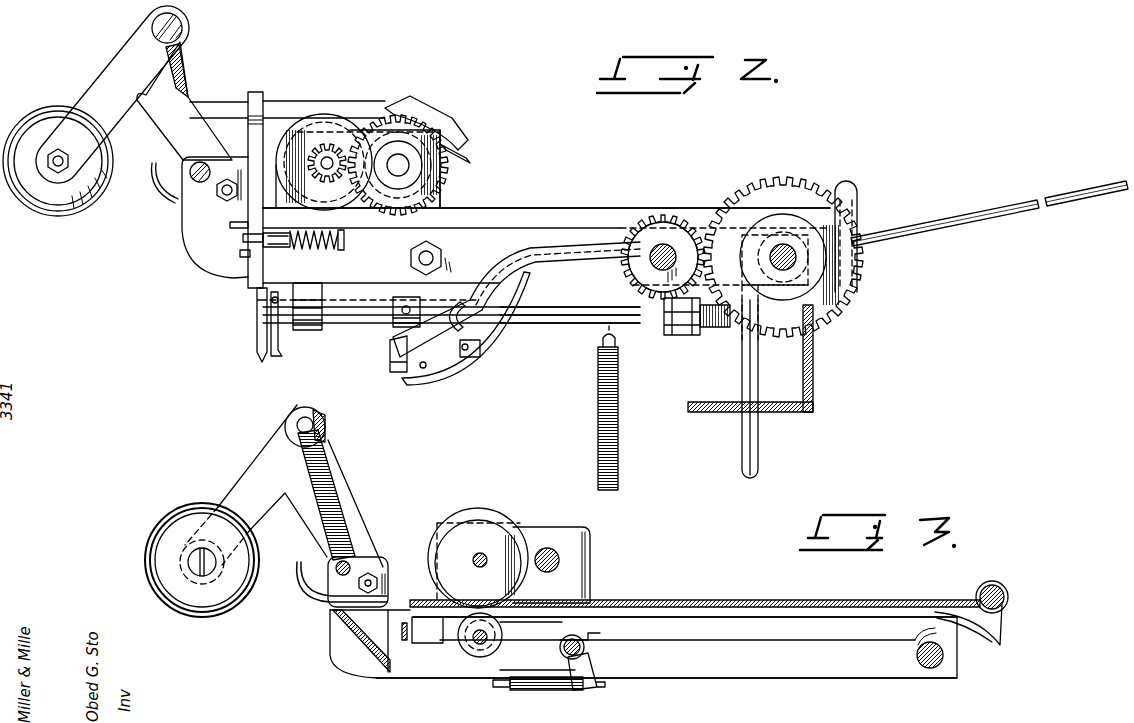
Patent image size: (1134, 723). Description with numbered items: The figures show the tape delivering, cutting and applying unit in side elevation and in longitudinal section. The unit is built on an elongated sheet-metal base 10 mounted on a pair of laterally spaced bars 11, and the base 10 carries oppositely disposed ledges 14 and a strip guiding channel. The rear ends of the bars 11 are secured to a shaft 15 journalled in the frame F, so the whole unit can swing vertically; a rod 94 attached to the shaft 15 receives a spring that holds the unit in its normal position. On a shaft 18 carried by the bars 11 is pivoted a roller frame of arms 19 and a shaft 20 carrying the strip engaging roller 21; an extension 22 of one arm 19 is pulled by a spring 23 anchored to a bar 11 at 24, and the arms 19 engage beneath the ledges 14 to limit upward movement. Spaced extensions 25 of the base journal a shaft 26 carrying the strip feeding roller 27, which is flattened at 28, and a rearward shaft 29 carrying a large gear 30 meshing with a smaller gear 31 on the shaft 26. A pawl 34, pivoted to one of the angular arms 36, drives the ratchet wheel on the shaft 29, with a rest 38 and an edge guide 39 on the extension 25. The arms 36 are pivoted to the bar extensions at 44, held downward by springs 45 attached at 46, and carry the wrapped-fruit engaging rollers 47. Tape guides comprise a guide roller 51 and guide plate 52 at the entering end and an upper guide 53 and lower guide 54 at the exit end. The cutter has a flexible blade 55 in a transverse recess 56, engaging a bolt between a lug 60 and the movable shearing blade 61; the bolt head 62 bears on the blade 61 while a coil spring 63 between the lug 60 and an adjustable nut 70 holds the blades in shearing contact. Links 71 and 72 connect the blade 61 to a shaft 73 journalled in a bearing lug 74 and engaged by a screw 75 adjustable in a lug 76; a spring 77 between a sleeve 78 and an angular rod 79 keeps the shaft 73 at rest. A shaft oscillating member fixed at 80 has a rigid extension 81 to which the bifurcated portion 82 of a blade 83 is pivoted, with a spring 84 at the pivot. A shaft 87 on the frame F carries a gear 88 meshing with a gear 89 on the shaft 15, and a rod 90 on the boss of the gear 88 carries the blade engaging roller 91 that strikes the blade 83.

In FIG. 2, the base 10 is at (535, 208).
In FIG. 3, the base 10 is at (675, 602).
In FIG. 2, the bars 11 is at (570, 226).
In FIG. 3, the bars 11 is at (820, 665).
In FIG. 3, the ledges 14 is at (770, 617).
In FIG. 2, the shaft 15 is at (784, 246).
In FIG. 3, the shaft 15 is at (944, 658).
In FIG. 2, the shaft 18 is at (443, 254).
In FIG. 3, the shaft 18 is at (592, 640).
In FIG. 3, the arms 19 is at (568, 642).
In FIG. 3, the shaft 20 is at (478, 645).
In FIG. 3, the strip engaging roller 21 is at (537, 646).
In FIG. 3, the extension 22 is at (604, 668).
In FIG. 3, the spring 23 is at (578, 691).
In FIG. 3, the spring attachment point 24 is at (499, 688).
In FIG. 3, the extensions 25 is at (548, 531).
In FIG. 2, the shaft 26 is at (327, 170).
In FIG. 3, the shaft 26 is at (480, 553).
In FIG. 2, the strip feeding roller 27 is at (346, 125).
In FIG. 3, the strip feeding roller 27 is at (478, 504).
In FIG. 3, the flattened portion 28 is at (472, 618).
In FIG. 2, the shaft 29 is at (400, 160).
In FIG. 3, the shaft 29 is at (560, 562).
In FIG. 2, the gear 30 is at (447, 196).
In FIG. 2, the gear 31 is at (327, 153).
In FIG. 2, the actuating pawl 34 is at (213, 103).
In FIG. 2, the angular arms 36 is at (103, 82).
In FIG. 3, the angular arms 36 is at (268, 450).
In FIG. 2, the rest 38 is at (467, 160).
In FIG. 2, the edge guide 39 is at (463, 131).
In FIG. 2, the pivot 44 is at (215, 190).
In FIG. 3, the pivot 44 is at (380, 570).
In FIG. 2, the spring 45 is at (184, 70).
In FIG. 3, the spring 45 is at (335, 505).
In FIG. 2, the spring attachment point 46 is at (172, 33).
In FIG. 3, the spring attachment point 46 is at (312, 420).
In FIG. 2, the wrapped-fruit engaging roller 47 is at (36, 196).
In FIG. 3, the wrapped-fruit engaging roller 47 is at (170, 517).
In FIG. 2, the guide roller 51 is at (860, 203).
In FIG. 3, the guide roller 51 is at (1004, 590).
In FIG. 3, the guide plate 52 is at (1004, 632).
In FIG. 2, the upper guide 53 is at (160, 172).
In FIG. 3, the upper guide 53 is at (300, 586).
In FIG. 3, the lower guide 54 is at (348, 623).
In FIG. 2, the blade 55 is at (242, 253).
In FIG. 3, the blade 55 is at (403, 645).
In FIG. 2, the transverse recess 56 is at (232, 225).
In FIG. 3, the transverse recess 56 is at (398, 613).
In FIG. 2, the lug 60 is at (276, 248).
In FIG. 2, the movable shearing blade 61 is at (256, 126).
In FIG. 2, the bolt head 62 is at (245, 240).
In FIG. 2, the coil spring 63 is at (320, 250).
In FIG. 2, the adjustable nut 70 is at (342, 242).
In FIG. 2, the link 71 is at (258, 300).
In FIG. 2, the link 72 is at (279, 342).
In FIG. 2, the shaft 73 is at (556, 322).
In FIG. 2, the bearing lug 74 is at (310, 334).
In FIG. 2, the screw 75 is at (712, 328).
In FIG. 2, the lug 76 is at (680, 333).
In FIG. 2, the spring 77 is at (598, 385).
In FIG. 2, the sleeve 78 is at (560, 307).
In FIG. 2, the angular rod 79 is at (742, 377).
In FIG. 2, the shaft oscillating member fixing 80 is at (393, 298).
In FIG. 2, the rigid extension 81 is at (393, 327).
In FIG. 2, the bifurcated portion 82 is at (447, 372).
In FIG. 2, the blade 83 is at (492, 330).
In FIG. 2, the spring 84 is at (398, 370).
In FIG. 2, the shaft 87 is at (667, 254).
In FIG. 2, the gear 88 is at (657, 226).
In FIG. 2, the gear 89 is at (760, 194).
In FIG. 2, the rod 90 is at (508, 256).
In FIG. 2, the blade engaging roller 91 is at (450, 306).
In FIG. 2, the rod 94 is at (950, 217).
In FIG. 2, the frame F is at (816, 400).